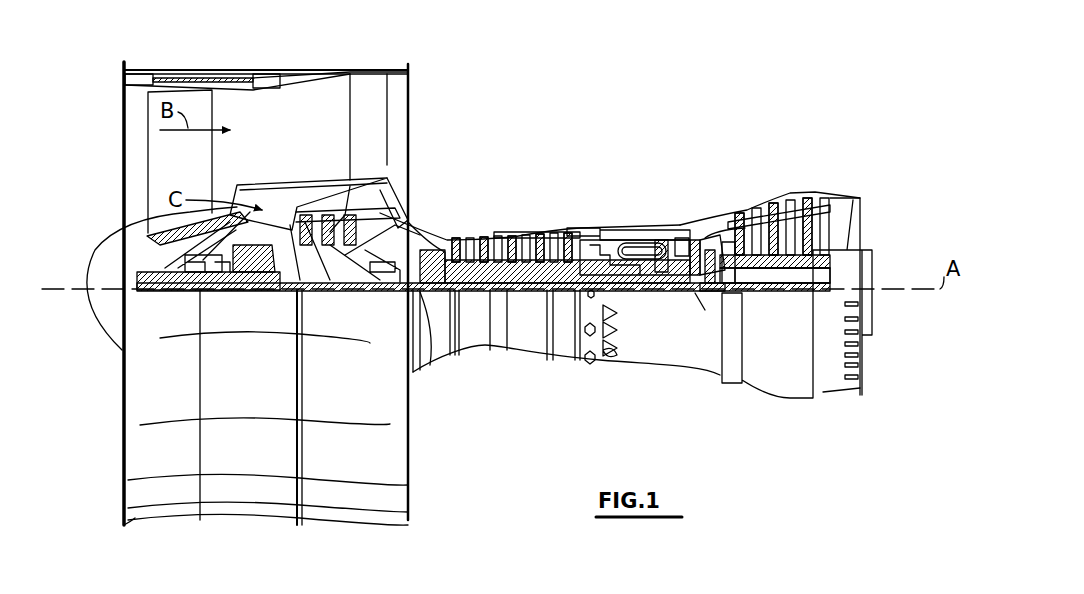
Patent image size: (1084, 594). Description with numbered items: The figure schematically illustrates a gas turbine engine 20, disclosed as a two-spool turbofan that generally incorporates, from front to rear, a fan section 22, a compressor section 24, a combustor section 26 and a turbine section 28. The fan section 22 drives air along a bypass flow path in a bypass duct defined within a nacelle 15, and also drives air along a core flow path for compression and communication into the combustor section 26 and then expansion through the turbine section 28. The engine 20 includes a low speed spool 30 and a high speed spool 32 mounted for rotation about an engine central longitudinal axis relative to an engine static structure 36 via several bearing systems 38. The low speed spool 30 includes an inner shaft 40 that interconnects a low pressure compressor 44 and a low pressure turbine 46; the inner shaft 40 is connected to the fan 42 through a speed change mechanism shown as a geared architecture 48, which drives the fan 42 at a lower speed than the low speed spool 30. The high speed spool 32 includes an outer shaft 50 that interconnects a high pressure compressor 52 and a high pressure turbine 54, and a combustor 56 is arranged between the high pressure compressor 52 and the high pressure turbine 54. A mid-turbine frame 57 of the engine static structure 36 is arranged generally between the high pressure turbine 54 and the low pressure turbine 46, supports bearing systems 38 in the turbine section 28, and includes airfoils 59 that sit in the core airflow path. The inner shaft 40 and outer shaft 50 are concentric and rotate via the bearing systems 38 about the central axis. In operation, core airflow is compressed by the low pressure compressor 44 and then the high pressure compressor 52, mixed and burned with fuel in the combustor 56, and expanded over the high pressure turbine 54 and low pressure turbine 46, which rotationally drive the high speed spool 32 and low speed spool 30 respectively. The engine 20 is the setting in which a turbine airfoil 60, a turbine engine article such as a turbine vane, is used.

The nacelle 15 is at (268, 71).
The gas turbine engine 20 is at (630, 108).
The fan section 22 is at (209, 57).
The compressor section 24 is at (448, 215).
The combustor section 26 is at (622, 206).
The turbine section 28 is at (745, 177).
The low speed spool 30 is at (530, 298).
The high speed spool 32 is at (567, 230).
The engine static structure 36 is at (562, 363).
The bearing systems 38 is at (373, 277).
The inner shaft 40 is at (430, 365).
The fan 42 is at (196, 170).
The low pressure compressor 44 is at (380, 195).
The low pressure turbine 46 is at (772, 198).
The geared architecture 48 is at (273, 277).
The outer shaft 50 is at (627, 283).
The high pressure compressor 52 is at (517, 240).
The high pressure turbine 54 is at (678, 213).
The combustor 56 is at (620, 247).
The mid-turbine frame 57 is at (716, 250).
The airfoils 59 is at (730, 250).
The turbine airfoil 60 is at (720, 240).